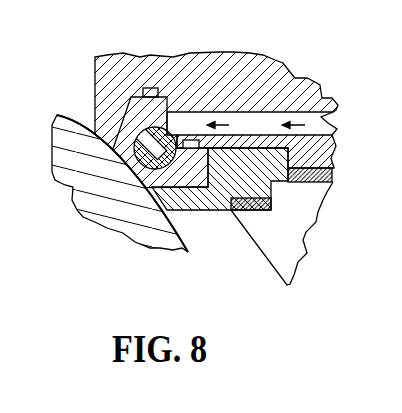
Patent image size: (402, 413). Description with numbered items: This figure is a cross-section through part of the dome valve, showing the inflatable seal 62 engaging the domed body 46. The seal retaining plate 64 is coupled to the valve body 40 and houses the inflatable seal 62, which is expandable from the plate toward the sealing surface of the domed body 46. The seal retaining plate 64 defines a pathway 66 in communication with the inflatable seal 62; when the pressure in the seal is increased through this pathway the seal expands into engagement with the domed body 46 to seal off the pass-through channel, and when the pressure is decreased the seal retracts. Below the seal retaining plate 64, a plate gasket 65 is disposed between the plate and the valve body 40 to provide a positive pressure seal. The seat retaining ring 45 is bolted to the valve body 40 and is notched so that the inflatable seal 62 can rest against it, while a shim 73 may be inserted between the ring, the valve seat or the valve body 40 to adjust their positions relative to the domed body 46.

The valve body 40 is at (297, 227).
The seat retaining ring 45 is at (200, 209).
The domed body 46 is at (93, 216).
The inflatable seal 62 is at (150, 103).
The seal retaining plate 64 is at (277, 75).
The plate gasket 65 is at (333, 175).
The pathway 66 is at (338, 123).
The shim 73 is at (260, 210).